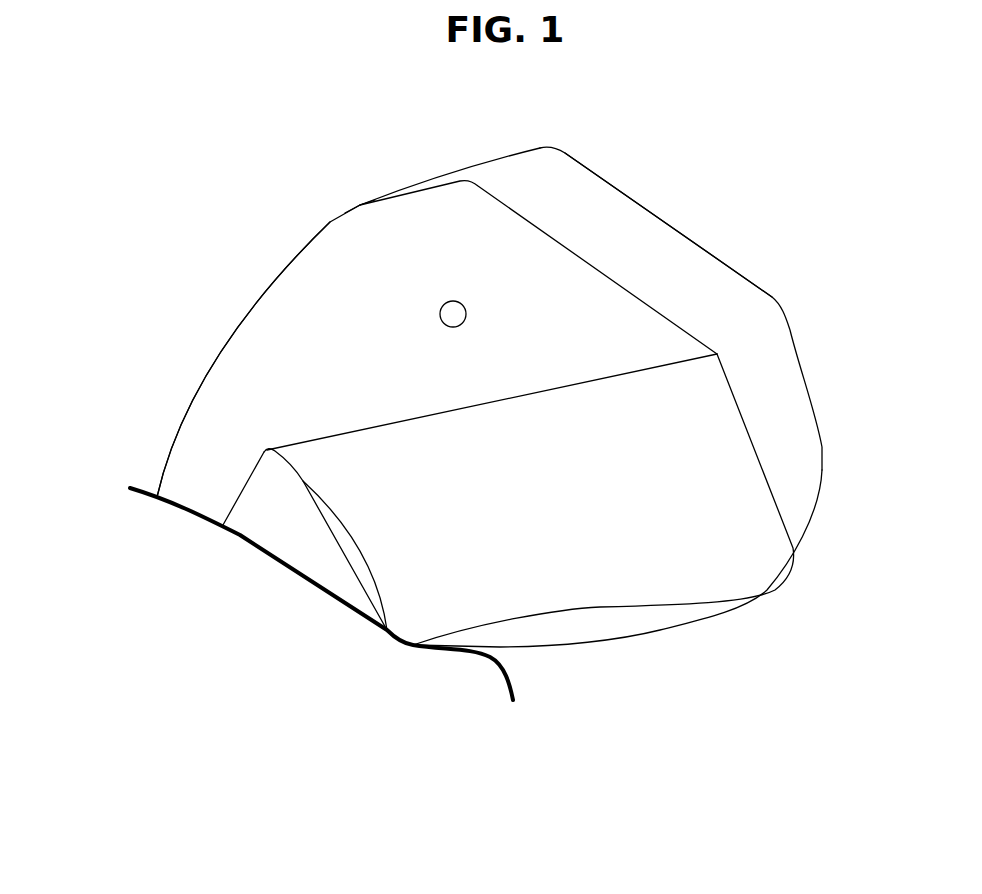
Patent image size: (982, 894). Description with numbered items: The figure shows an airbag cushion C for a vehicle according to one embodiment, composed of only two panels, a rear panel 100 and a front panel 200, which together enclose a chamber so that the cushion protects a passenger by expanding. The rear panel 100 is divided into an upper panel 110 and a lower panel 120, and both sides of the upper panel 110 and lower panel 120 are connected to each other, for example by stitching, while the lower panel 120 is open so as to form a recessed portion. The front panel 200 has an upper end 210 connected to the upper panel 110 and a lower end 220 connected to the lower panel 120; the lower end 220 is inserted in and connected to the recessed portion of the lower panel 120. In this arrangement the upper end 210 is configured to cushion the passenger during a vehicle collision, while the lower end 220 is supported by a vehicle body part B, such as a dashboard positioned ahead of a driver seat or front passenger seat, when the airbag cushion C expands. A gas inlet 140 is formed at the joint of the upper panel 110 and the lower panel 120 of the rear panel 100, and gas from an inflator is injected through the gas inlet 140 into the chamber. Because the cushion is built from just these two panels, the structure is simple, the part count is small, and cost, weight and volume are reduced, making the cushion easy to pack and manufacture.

The rear panel 100 is at (228, 345).
The upper panel 110 is at (347, 307).
The lower panel 120 is at (643, 520).
The gas inlet 140 is at (195, 467).
The front panel 200 is at (753, 280).
The upper end 210 is at (658, 258).
The lower end 220 is at (610, 640).
The vehicle body part B is at (295, 570).
The airbag cushion C is at (385, 184).